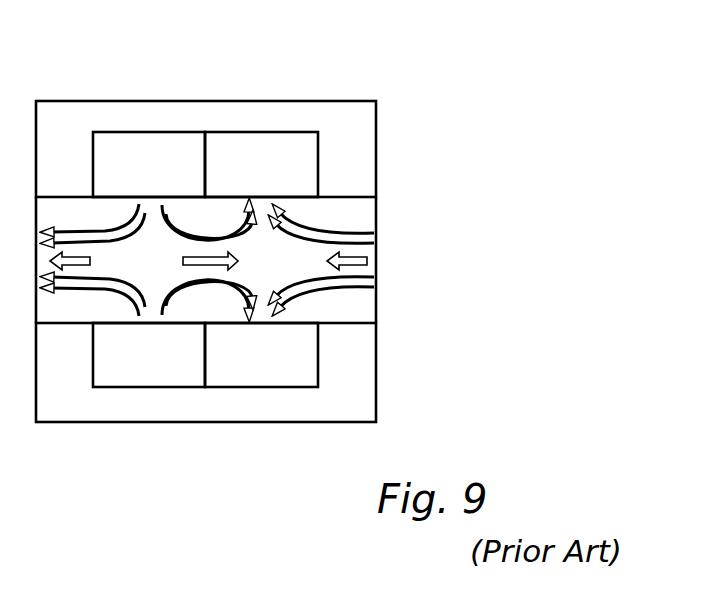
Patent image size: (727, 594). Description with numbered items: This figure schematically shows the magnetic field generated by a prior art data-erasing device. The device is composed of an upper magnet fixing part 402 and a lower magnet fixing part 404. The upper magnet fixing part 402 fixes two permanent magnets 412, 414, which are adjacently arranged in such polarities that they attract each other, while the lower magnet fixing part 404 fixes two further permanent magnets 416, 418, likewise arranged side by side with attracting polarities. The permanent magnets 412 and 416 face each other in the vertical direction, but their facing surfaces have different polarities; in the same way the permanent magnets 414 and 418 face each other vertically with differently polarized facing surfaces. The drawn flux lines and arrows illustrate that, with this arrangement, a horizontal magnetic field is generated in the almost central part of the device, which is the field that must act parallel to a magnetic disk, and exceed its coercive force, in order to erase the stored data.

The upper magnet fixing part 402 is at (359, 160).
The lower magnet fixing part 404 is at (362, 378).
The permanent magnet 412 is at (180, 150).
The permanent magnet 414 is at (293, 148).
The permanent magnet 416 is at (173, 378).
The permanent magnet 418 is at (287, 378).